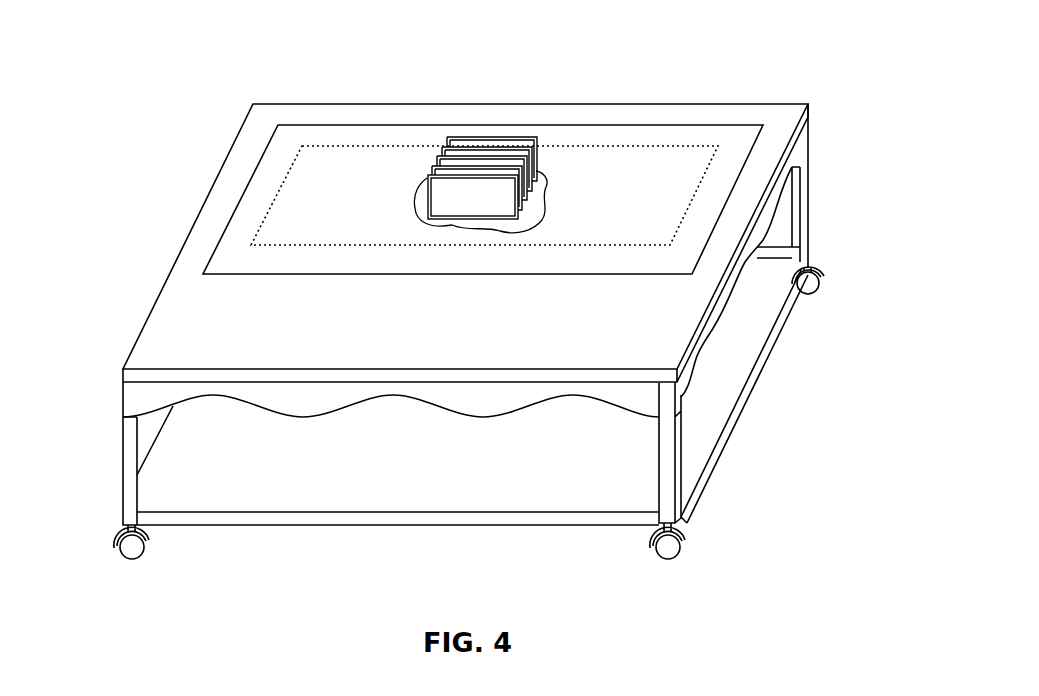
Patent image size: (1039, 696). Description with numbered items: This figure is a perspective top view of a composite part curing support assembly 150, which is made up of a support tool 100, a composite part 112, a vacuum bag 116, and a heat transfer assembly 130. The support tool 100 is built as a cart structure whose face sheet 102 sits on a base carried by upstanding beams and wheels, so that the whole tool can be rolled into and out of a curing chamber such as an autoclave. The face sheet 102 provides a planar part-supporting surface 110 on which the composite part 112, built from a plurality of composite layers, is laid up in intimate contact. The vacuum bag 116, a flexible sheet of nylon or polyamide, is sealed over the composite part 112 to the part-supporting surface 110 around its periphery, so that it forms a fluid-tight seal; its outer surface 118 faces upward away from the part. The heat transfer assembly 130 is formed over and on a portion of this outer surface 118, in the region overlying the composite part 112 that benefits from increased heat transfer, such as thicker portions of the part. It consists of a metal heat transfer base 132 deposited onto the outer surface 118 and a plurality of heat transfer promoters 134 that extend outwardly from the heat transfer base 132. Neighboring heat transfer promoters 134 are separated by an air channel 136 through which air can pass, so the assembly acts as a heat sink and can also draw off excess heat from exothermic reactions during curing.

The support tool 100 is at (795, 33).
The face sheet 102 is at (777, 125).
The part-supporting surface 110 is at (290, 117).
The composite part 112 is at (648, 145).
The vacuum bag 116 is at (343, 132).
The outer surface 118 is at (330, 160).
The heat transfer assembly 130 is at (418, 154).
The heat transfer base 132 is at (540, 178).
The heat transfer promoter 134 is at (440, 197).
The air channel 136 is at (537, 143).
The composite part curing support assembly 150 is at (137, 33).